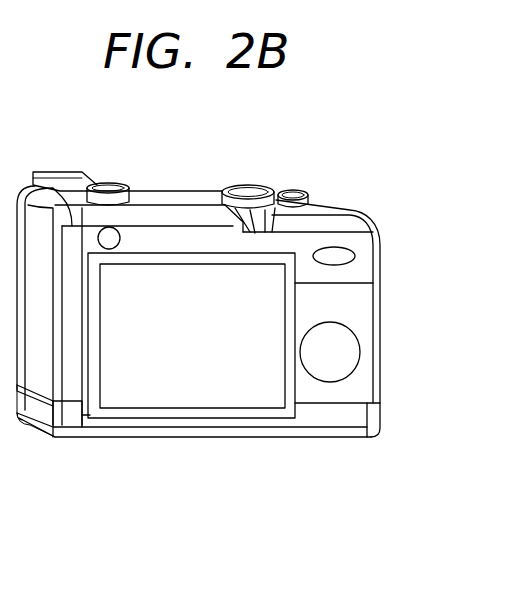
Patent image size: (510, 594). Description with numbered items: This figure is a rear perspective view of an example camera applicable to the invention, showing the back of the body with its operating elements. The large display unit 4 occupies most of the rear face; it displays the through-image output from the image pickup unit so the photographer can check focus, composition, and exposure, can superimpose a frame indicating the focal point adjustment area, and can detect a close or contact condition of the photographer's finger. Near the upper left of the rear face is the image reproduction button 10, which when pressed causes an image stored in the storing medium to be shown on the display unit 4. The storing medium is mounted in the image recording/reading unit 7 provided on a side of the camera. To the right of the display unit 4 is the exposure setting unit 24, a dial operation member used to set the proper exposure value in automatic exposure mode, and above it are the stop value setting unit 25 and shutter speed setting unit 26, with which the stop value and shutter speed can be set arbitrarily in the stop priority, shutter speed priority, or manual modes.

The image recording/reading unit 7 is at (228, 322).
The display unit 4 is at (167, 373).
The image reproduction button 10 is at (107, 236).
The exposure setting unit 24 is at (337, 362).
The stop value setting unit 25 is at (340, 252).
The shutter speed setting unit 26 is at (361, 209).